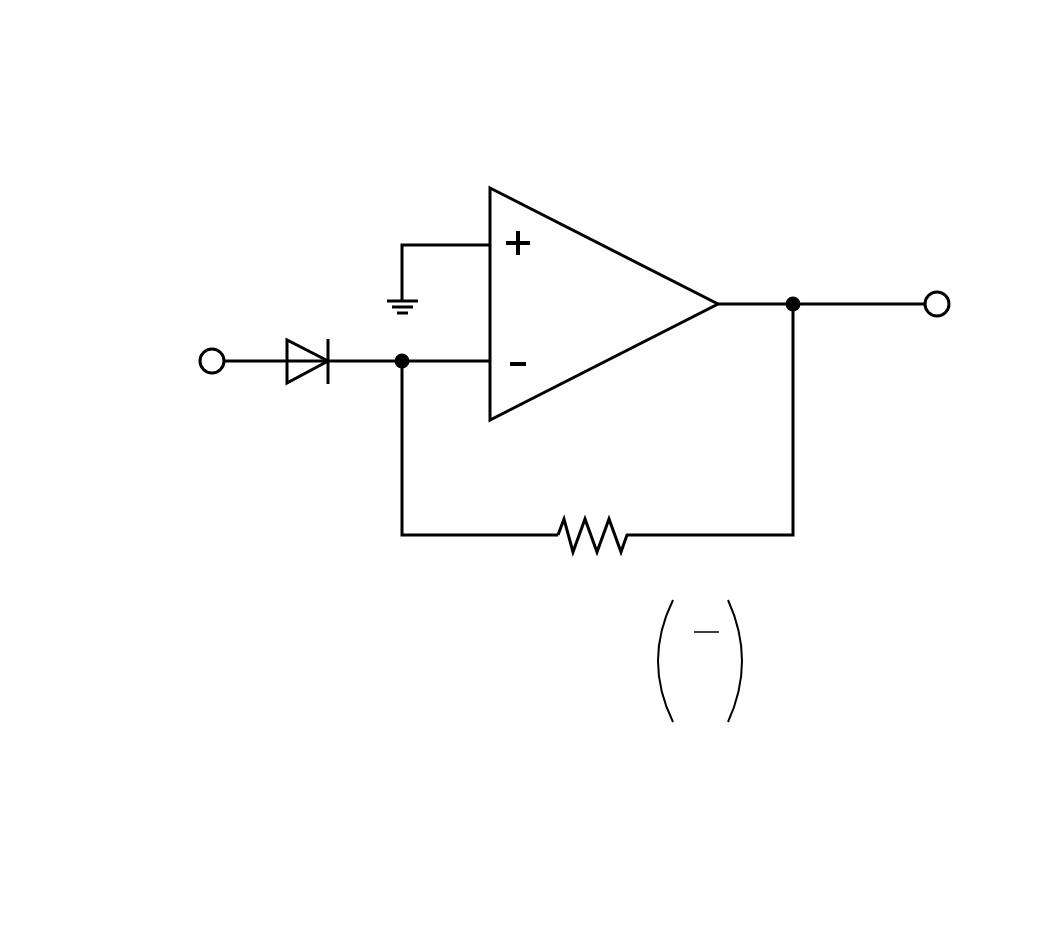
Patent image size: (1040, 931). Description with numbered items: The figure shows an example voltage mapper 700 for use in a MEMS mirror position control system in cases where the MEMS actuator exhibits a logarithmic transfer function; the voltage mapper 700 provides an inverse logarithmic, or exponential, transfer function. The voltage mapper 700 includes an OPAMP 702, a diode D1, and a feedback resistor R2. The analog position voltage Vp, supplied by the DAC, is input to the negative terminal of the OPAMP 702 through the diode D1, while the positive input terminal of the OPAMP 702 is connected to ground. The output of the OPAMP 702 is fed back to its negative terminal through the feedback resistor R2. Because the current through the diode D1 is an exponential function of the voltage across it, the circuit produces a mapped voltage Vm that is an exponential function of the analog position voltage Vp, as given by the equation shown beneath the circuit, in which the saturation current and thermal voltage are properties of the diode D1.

The voltage mapper 700 is at (790, 87).
The OPAMP 702 is at (603, 245).
The diode D1 is at (344, 345).
The feedback resistor R2 is at (595, 518).
The analog position voltage Vp is at (226, 359).
The mapped voltage Vm is at (896, 302).